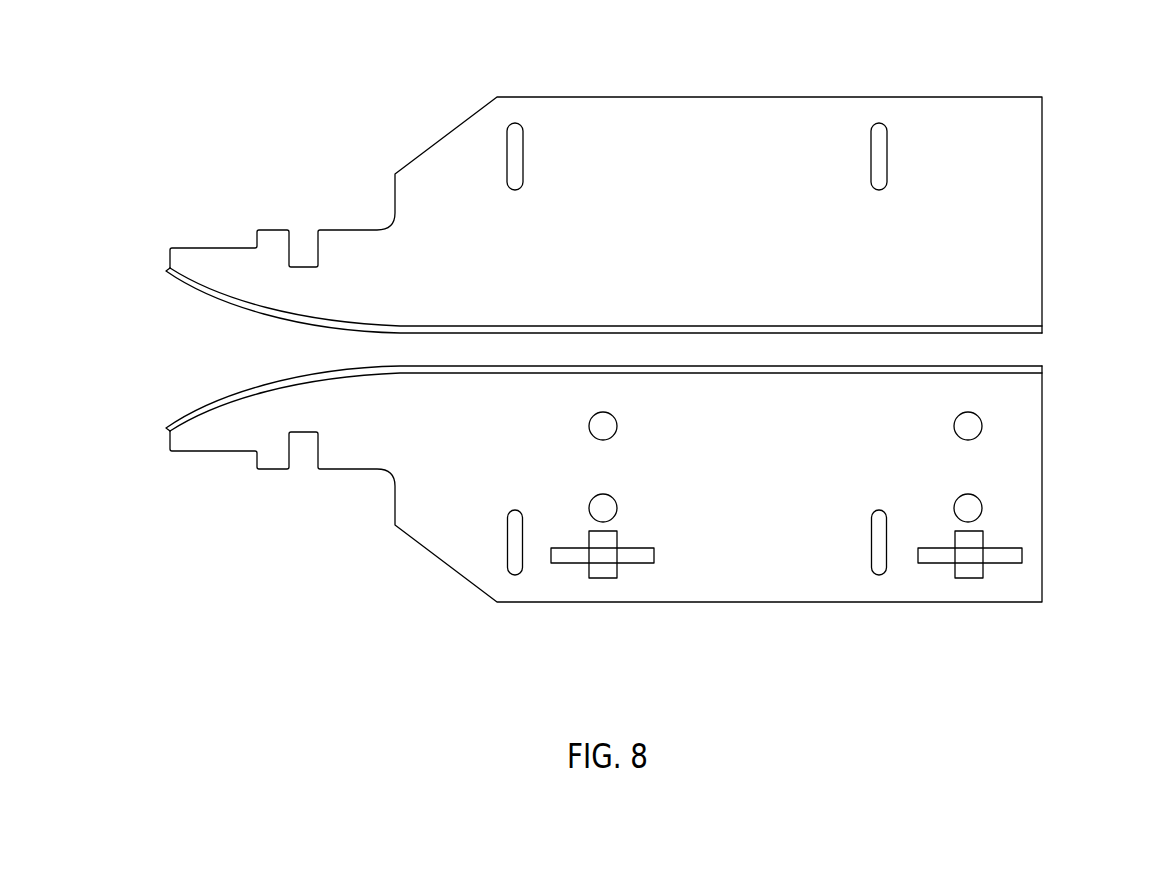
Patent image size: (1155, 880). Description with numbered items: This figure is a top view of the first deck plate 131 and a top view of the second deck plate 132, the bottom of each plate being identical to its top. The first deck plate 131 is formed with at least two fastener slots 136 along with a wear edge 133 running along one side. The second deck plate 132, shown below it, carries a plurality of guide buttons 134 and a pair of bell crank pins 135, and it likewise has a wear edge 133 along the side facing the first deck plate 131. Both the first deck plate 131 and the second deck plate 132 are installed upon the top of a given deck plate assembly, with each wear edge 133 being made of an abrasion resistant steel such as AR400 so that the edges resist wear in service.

The first deck plate 131 is at (707, 132).
The second deck plate 132 is at (749, 516).
The wear edge 133 is at (297, 377).
The guide buttons 134 is at (598, 430).
The bell crank pins 135 is at (601, 553).
The fastener slots 136 is at (515, 143).